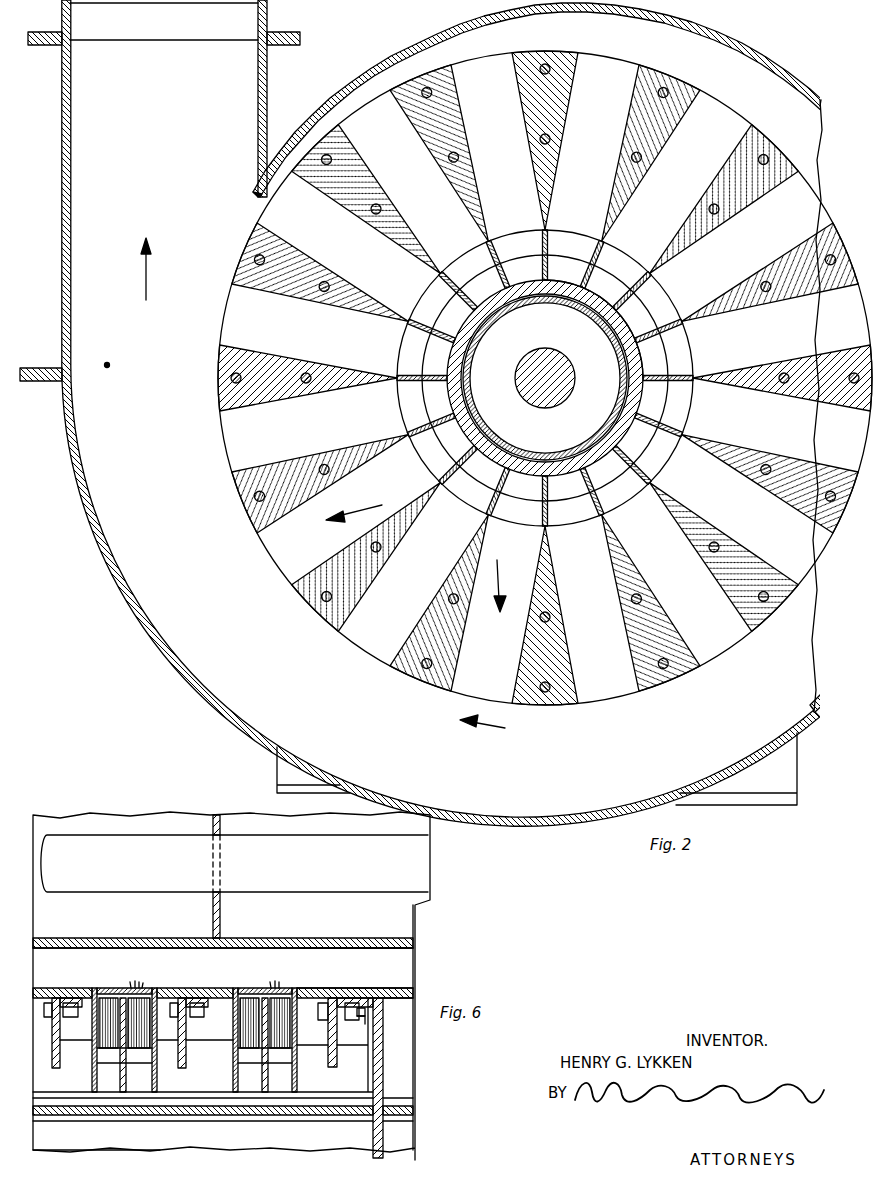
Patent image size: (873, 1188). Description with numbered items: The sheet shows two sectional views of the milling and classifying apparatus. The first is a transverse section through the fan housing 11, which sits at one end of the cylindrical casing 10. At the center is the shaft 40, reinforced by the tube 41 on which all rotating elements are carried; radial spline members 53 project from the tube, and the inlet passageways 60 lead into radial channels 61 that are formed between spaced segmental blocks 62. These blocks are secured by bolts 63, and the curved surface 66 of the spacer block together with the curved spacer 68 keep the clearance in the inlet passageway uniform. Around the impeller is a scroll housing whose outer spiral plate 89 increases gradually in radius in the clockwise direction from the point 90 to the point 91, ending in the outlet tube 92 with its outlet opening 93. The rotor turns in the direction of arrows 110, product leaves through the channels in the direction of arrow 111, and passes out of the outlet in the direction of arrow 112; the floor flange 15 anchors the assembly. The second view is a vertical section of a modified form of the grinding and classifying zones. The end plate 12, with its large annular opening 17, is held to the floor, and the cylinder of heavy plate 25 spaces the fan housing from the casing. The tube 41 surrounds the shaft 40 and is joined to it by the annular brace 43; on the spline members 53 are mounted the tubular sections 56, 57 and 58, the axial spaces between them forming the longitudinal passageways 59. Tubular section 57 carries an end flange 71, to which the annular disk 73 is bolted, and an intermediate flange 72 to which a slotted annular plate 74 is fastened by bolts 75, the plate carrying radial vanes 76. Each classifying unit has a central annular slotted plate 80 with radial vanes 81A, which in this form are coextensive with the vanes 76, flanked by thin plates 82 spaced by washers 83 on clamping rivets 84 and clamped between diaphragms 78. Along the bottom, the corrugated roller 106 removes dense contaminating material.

In FIG. 6, the cylindrical casing 10 is at (424, 927).
In FIG. 2, the fan housing 11 is at (742, 56).
In FIG. 6, the end plate 12 is at (383, 1136).
In FIG. 2, the floor flange 15 is at (277, 773).
In FIG. 6, the annular opening 17 is at (386, 1004).
In FIG. 6, the cylinder of heavy plate 25 is at (388, 1106).
In FIG. 2, the shaft 40 is at (560, 360).
In FIG. 6, the shaft 40 is at (234, 863).
In FIG. 2, the tube 41 is at (462, 381).
In FIG. 6, the tube 41 is at (110, 938).
In FIG. 6, the annular brace 43 is at (221, 918).
In FIG. 2, the radial spline members 53 is at (492, 290).
In FIG. 6, the radial spline members 53 is at (223, 957).
In FIG. 6, the tubular section 56 is at (48, 998).
In FIG. 6, the tubular section 57 is at (348, 1003).
In FIG. 6, the tubular section 58 is at (392, 988).
In FIG. 6, the longitudinal passageways 59 is at (272, 940).
In FIG. 2, the inlet passageways 60 is at (539, 373).
In FIG. 2, the radial channels 61 is at (545, 378).
In FIG. 2, the segmental blocks 62 is at (610, 138).
In FIG. 2, the bolts 63 is at (547, 72).
In FIG. 2, the curved surface 66 is at (618, 296).
In FIG. 2, the curved spacer 68 is at (640, 362).
In FIG. 6, the end flange 71 is at (360, 1018).
In FIG. 6, the intermediate flange 72 is at (70, 1007).
In FIG. 6, the annular disk 73 is at (365, 1028).
In FIG. 6, the slotted annular plate 74 is at (60, 1048).
In FIG. 6, the bolts 75 is at (174, 1017).
In FIG. 6, the radial vanes 76 is at (203, 1045).
In FIG. 6, the diaphragms 78 is at (95, 988).
In FIG. 6, the central annular slotted plate 80 is at (128, 988).
In FIG. 6, the radial vanes 81A is at (123, 1084).
In FIG. 6, the thin plates 82 is at (102, 988).
In FIG. 6, the washers 83 is at (138, 982).
In FIG. 6, the clamping rivets 84 is at (84, 988).
In FIG. 2, the outer spiral plate 89 is at (580, 760).
In FIG. 2, the point 90 is at (256, 199).
In FIG. 2, the point 91 is at (62, 376).
In FIG. 2, the outlet tube 92 is at (70, 138).
In FIG. 2, the outlet opening 93 is at (190, 71).
In FIG. 6, the corrugated roller 106 is at (165, 1148).
In FIG. 2, the arrows 110 is at (490, 722).
In FIG. 2, the arrow 111 is at (418, 555).
In FIG. 2, the arrow 112 is at (146, 278).